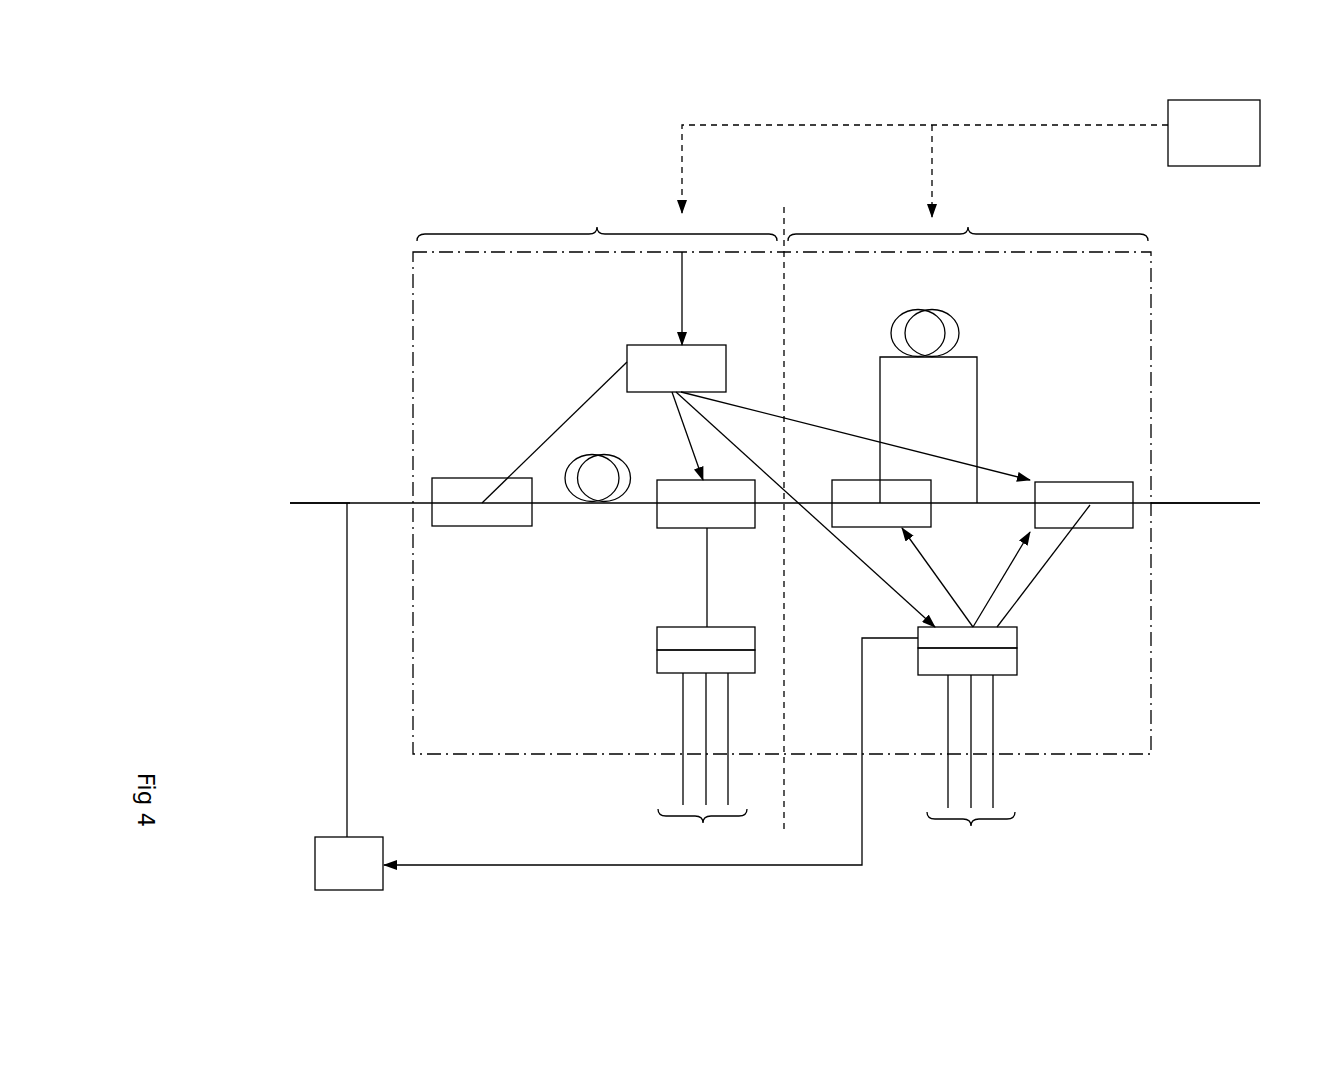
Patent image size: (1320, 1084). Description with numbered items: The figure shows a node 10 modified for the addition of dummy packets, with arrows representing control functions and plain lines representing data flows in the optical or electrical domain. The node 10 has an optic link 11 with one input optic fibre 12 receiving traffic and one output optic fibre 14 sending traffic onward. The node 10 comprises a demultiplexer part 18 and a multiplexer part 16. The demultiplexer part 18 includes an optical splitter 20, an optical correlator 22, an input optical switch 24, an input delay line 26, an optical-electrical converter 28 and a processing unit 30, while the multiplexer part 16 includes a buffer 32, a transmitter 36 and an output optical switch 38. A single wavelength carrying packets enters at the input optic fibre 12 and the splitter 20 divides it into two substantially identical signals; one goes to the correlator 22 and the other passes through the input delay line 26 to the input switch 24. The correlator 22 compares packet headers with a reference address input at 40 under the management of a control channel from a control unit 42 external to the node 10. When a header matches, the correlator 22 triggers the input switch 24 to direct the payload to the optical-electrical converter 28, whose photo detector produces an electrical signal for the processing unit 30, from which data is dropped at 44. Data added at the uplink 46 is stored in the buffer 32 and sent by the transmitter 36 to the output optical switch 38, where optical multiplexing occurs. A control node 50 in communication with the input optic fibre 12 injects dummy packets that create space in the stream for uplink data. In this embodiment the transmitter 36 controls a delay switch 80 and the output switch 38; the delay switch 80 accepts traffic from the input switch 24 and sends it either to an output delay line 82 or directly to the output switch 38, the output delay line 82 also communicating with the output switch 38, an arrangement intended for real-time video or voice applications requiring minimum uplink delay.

The node 10 is at (413, 300).
The optic link 11 is at (385, 503).
The input optic fibre 12 is at (297, 503).
The output optic fibre 14 is at (1193, 498).
The multiplexer part 16 is at (968, 219).
The demultiplexer part 18 is at (600, 514).
The optical splitter 20 is at (473, 527).
The optical correlator 22 is at (630, 357).
The input optical switch 24 is at (657, 525).
The input delay line 26 is at (595, 508).
The optical-electrical converter 28 is at (660, 640).
The processing unit 30 is at (660, 665).
The buffer 32 is at (1010, 665).
The transmitter 36 is at (1017, 628).
The output optical switch 38 is at (1107, 483).
The reference address input 40 is at (677, 310).
The control unit 42 is at (971, 158).
The drop point 44 is at (702, 766).
The uplink 46 is at (971, 772).
The control node 50 is at (616, 696).
The delay switch 80 is at (855, 480).
The output delay line 82 is at (943, 320).